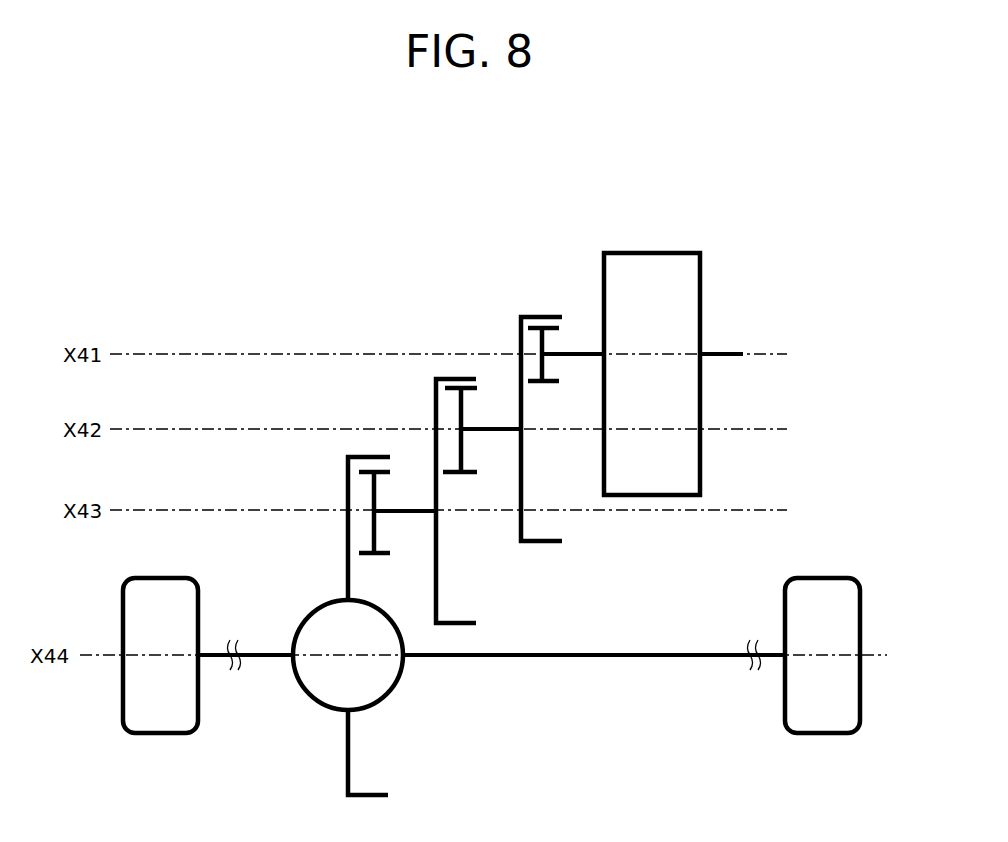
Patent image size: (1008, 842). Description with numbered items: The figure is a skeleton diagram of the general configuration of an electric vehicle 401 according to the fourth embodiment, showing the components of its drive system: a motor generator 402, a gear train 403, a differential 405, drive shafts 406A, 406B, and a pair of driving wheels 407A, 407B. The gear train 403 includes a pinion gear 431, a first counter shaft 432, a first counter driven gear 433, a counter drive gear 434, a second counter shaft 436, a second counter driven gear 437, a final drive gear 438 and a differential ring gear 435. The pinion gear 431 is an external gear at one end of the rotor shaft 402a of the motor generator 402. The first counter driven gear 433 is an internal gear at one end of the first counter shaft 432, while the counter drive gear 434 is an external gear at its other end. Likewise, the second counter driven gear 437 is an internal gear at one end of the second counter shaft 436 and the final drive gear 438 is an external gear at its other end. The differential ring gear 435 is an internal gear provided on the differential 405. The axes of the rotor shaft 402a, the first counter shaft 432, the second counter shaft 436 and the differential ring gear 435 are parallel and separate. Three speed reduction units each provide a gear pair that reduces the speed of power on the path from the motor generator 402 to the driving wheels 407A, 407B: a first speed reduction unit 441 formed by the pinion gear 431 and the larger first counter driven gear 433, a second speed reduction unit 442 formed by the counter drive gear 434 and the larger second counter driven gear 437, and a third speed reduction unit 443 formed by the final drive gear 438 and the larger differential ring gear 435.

The electric vehicle 401 is at (638, 205).
The motor generator 402 is at (702, 288).
The rotor shaft 402a is at (580, 358).
The gear train 403 is at (292, 229).
The differential 405 is at (306, 620).
The drive shaft 406A is at (576, 658).
The drive shaft 406B is at (256, 660).
The driving wheel 407A is at (822, 735).
The driving wheel 407B is at (146, 735).
The pinion gear 431 is at (538, 343).
The first counter shaft 432 is at (504, 431).
The first counter driven gear 433 is at (534, 316).
The counter drive gear 434 is at (477, 452).
The differential ring gear 435 is at (348, 473).
The second counter shaft 436 is at (410, 514).
The second counter driven gear 437 is at (445, 378).
The final drive gear 438 is at (372, 493).
The first speed reduction unit 441 is at (580, 312).
The second speed reduction unit 442 is at (498, 375).
The third speed reduction unit 443 is at (409, 451).